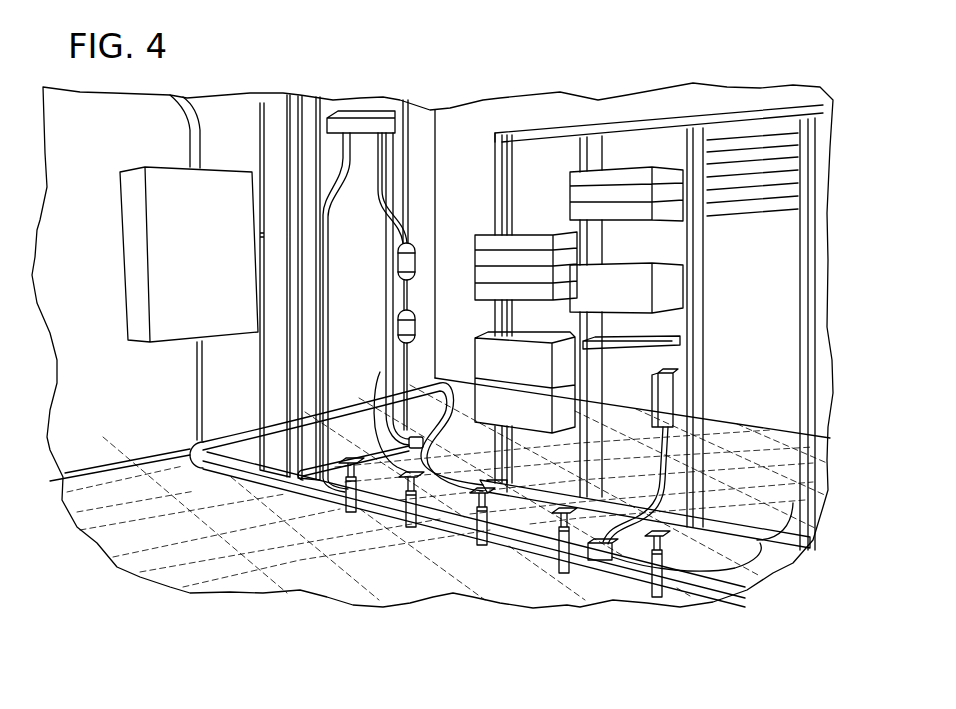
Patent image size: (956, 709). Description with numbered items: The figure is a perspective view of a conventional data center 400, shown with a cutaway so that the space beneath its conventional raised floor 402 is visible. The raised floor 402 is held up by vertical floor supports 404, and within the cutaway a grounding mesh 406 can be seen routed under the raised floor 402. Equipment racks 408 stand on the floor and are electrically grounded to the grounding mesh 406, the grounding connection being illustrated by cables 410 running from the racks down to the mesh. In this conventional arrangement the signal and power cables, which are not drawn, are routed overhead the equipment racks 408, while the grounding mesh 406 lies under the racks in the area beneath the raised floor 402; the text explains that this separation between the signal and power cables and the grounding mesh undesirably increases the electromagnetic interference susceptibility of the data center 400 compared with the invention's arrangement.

The data center 400 is at (590, 79).
The raised floor 402 is at (173, 516).
The vertical floor supports 404 is at (352, 480).
The grounding mesh 406 is at (380, 372).
The equipment racks 408 is at (722, 314).
The cables 410 is at (760, 575).